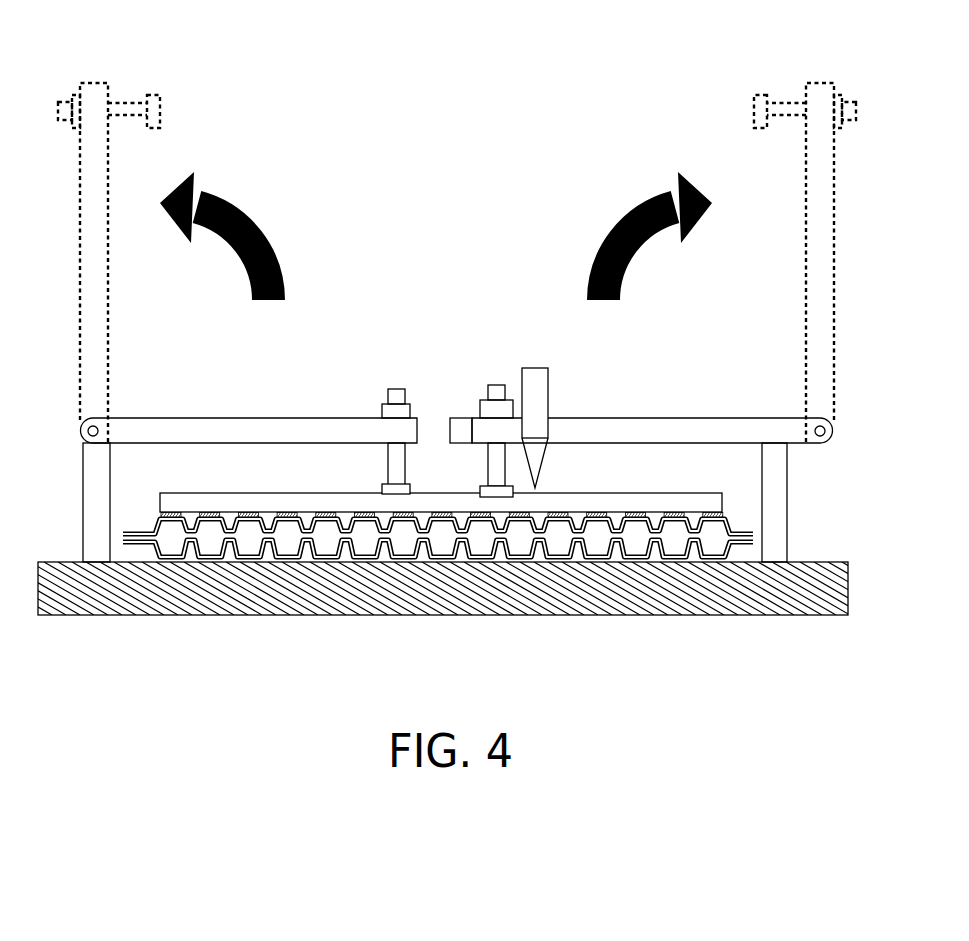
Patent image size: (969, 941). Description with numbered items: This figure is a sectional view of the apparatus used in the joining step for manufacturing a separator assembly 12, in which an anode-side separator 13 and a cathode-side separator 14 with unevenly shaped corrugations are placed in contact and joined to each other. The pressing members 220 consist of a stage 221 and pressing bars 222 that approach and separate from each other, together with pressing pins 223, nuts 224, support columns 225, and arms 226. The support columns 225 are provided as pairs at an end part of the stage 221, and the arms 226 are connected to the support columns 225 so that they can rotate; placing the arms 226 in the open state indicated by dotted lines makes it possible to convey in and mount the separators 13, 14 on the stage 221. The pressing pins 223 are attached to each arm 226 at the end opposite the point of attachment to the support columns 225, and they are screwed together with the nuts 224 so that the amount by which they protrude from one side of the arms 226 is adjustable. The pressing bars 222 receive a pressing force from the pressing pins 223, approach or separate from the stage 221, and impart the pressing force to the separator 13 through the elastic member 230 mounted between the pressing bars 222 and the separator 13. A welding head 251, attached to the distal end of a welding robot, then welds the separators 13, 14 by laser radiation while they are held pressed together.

The separator assembly 12 is at (438, 605).
The anode-side separator 13 is at (682, 562).
The cathode-side separator 14 is at (712, 560).
The pressing members 220 is at (457, 412).
The stage 221 is at (430, 590).
The pressing bars 222 is at (210, 502).
The pressing pins 223 is at (404, 426).
The nuts 224 is at (384, 418).
The support columns 225 is at (98, 477).
The arms 226 is at (268, 437).
The elastic member 230 is at (486, 595).
The welding head 251 is at (537, 368).